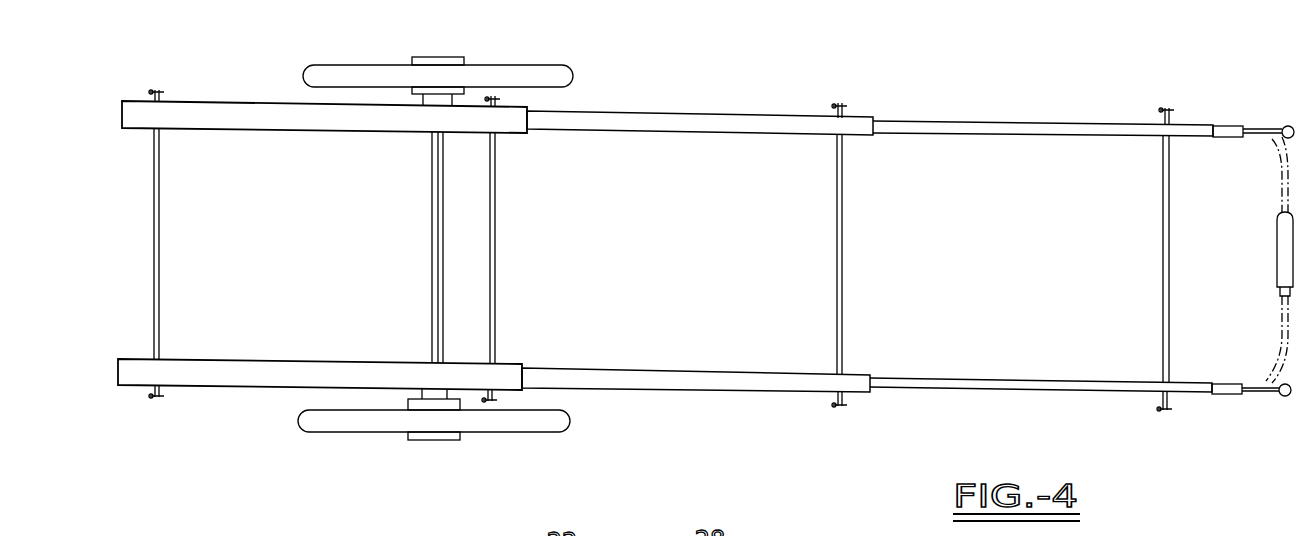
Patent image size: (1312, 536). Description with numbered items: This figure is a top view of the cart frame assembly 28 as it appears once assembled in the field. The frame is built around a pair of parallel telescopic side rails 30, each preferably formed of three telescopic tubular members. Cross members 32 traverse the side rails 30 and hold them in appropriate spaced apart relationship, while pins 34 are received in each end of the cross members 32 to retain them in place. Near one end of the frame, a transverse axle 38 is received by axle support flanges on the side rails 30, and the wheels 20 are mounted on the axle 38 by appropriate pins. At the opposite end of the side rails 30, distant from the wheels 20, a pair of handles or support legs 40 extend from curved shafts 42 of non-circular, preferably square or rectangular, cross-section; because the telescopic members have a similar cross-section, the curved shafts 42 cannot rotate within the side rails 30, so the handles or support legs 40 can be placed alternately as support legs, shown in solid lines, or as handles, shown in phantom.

The wheels 20 is at (487, 68).
The cart frame assembly 28 is at (754, 100).
The telescopic side rails 30 is at (665, 108).
The cross members 32 is at (160, 238).
The pins 34 is at (163, 92).
The axle 38 is at (432, 236).
The handles or support legs 40 is at (1288, 126).
The curved shaft 42 is at (1240, 126).